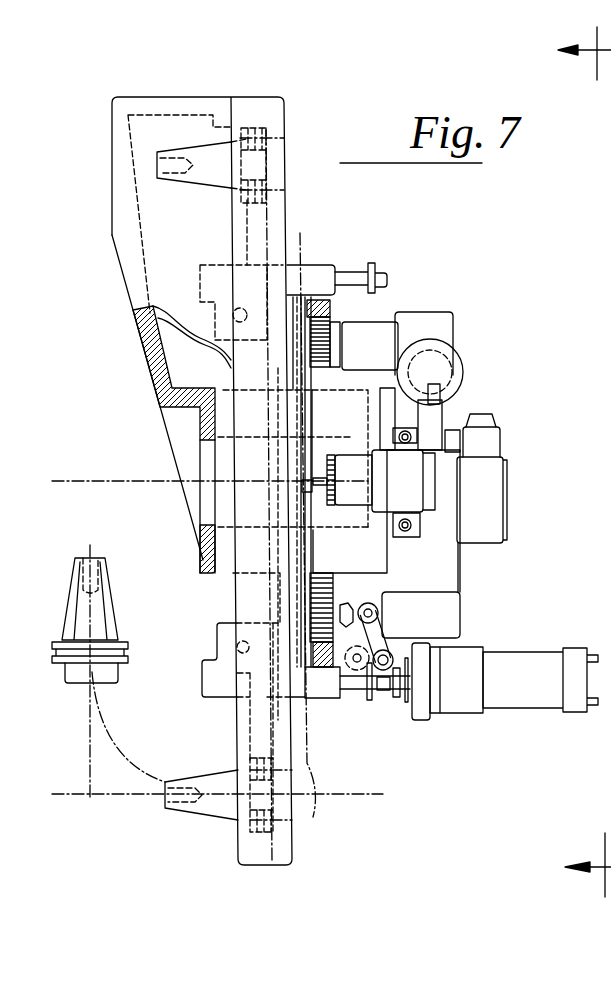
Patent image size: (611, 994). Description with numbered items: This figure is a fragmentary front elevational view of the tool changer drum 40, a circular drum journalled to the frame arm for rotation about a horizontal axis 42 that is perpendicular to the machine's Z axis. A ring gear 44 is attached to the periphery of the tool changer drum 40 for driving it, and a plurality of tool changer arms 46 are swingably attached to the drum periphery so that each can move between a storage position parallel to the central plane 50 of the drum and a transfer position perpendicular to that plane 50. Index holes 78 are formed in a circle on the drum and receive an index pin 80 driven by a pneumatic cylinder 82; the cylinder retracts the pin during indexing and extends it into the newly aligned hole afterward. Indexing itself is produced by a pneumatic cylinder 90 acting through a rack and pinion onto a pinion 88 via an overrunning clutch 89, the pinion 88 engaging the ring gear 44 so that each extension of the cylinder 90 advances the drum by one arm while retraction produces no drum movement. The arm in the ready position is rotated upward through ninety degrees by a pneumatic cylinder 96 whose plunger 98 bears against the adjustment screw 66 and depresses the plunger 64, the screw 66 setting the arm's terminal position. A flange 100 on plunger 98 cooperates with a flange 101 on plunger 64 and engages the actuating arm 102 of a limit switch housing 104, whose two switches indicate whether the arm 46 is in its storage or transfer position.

The tool changer drum 40 is at (310, 630).
The horizontal axis 42 is at (104, 481).
The ring gear 44 is at (330, 303).
The tool changer arm 46 is at (246, 240).
The central plane 50 is at (303, 233).
The plunger 64 is at (352, 682).
The adjustment screw 66 is at (398, 688).
The index hole 78 is at (302, 484).
The index pin 80 is at (318, 478).
The pneumatic cylinder 82 is at (410, 490).
The pinion 88 is at (334, 348).
The overrunning clutch 89 is at (383, 320).
The pneumatic cylinder 90 is at (463, 364).
The pneumatic cylinder 96 is at (530, 662).
The plunger 98 is at (410, 678).
The flange 100 is at (405, 705).
The flange 101 is at (380, 262).
The actuating arm 102 is at (372, 632).
The limit switch housing 104 is at (460, 615).